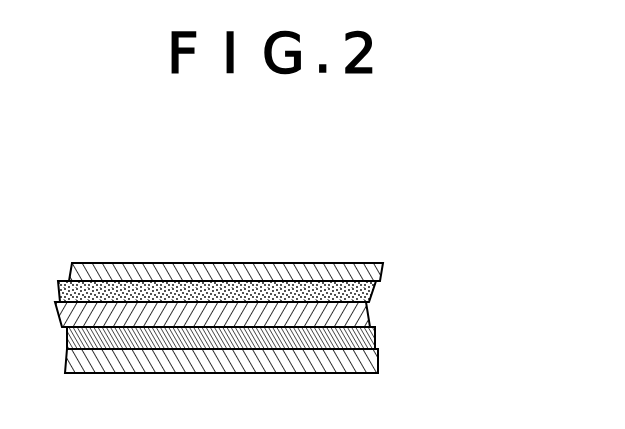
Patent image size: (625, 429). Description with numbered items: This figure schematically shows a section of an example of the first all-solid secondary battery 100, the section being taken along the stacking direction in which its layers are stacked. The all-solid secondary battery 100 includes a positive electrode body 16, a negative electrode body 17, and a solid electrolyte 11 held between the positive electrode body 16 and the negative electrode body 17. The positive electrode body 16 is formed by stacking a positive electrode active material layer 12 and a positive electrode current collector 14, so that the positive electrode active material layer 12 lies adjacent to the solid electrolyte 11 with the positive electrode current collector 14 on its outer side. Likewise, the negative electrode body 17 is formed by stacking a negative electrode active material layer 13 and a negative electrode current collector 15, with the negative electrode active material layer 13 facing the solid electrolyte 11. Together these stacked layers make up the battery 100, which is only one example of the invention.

The all-solid secondary battery 100 is at (297, 200).
The negative electrode body 17 is at (458, 242).
The negative electrode current collector 15 is at (383, 271).
The negative electrode active material layer 13 is at (371, 293).
The solid electrolyte 11 is at (364, 312).
The positive electrode body 16 is at (458, 335).
The positive electrode active material layer 12 is at (375, 336).
The positive electrode current collector 14 is at (378, 358).